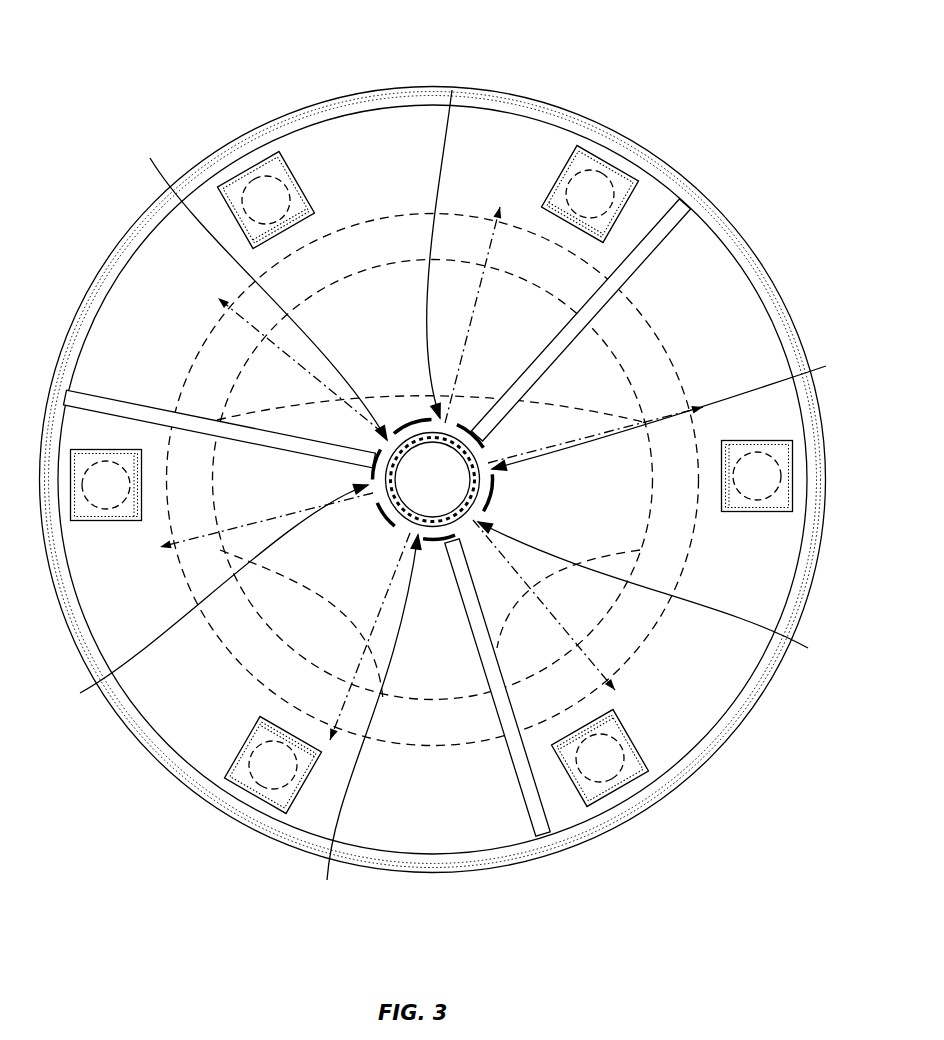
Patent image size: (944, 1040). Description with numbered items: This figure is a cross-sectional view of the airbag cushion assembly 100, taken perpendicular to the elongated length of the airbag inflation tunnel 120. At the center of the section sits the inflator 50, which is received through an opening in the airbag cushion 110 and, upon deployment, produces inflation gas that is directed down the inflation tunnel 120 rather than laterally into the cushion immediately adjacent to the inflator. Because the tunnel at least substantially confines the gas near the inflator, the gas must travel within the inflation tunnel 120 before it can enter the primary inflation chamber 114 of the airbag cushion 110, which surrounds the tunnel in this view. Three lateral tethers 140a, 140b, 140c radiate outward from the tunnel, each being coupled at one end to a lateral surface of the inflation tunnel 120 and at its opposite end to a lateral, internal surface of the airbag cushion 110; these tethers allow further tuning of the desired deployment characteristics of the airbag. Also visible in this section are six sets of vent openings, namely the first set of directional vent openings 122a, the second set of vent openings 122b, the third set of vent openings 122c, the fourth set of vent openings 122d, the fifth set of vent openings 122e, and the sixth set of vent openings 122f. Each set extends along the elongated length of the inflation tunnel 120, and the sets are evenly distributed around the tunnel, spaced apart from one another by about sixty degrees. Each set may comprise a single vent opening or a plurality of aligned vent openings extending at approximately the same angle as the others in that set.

The airbag cushion assembly 100 is at (707, 130).
The airbag cushion 110 is at (735, 318).
The primary inflation chamber 114 is at (680, 693).
The airbag inflation tunnel 120 is at (392, 524).
The inflator 50 is at (433, 480).
The first set of directional vent openings 122a is at (456, 228).
The second set of vent openings 122b is at (246, 287).
The third set of vent openings 122c is at (202, 598).
The fourth set of vent openings 122d is at (361, 722).
The fifth set of vent openings 122e is at (671, 595).
The sixth set of vent openings 122f is at (685, 409).
The lateral tether 140a is at (128, 403).
The lateral tether 140b is at (642, 265).
The lateral tether 140c is at (526, 779).